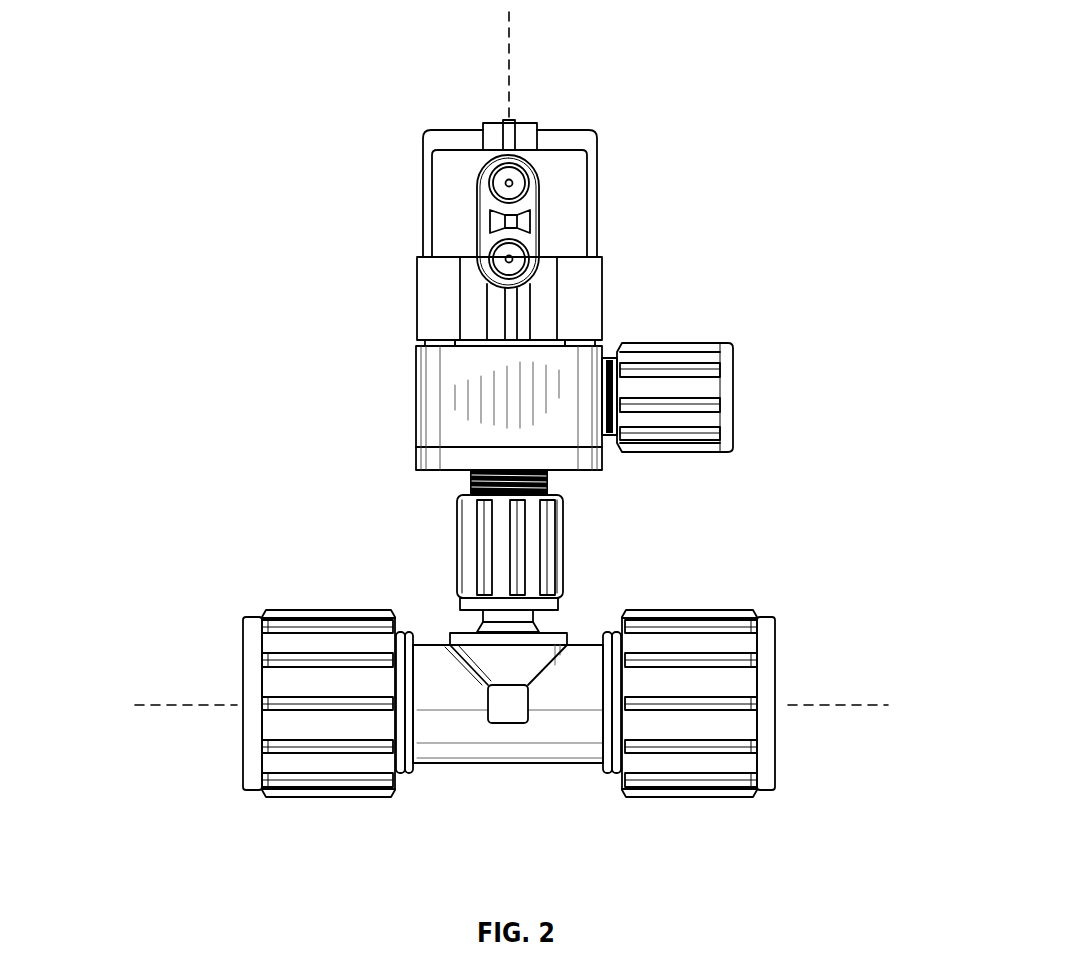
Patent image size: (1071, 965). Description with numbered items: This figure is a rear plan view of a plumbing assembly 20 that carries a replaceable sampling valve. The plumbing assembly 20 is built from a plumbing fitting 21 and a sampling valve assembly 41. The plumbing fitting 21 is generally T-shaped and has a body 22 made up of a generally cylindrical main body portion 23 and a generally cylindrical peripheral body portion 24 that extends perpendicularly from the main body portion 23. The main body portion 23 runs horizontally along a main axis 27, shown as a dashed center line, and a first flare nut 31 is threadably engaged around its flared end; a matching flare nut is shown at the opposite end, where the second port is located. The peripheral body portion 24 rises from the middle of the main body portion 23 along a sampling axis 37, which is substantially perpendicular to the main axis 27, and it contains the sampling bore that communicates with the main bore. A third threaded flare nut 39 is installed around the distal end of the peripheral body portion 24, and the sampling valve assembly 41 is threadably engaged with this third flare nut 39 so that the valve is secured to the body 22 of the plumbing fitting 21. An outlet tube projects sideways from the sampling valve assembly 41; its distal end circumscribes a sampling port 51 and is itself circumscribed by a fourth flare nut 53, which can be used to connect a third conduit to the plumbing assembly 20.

The plumbing assembly 20 is at (782, 153).
The plumbing fitting 21 is at (702, 581).
The body 22 is at (446, 648).
The main body portion 23 is at (523, 764).
The peripheral body portion 24 is at (536, 624).
The main axis 27 is at (850, 705).
The first flare nut 31 is at (243, 655).
The sampling axis 37 is at (510, 73).
The third threaded flare nut 39 is at (597, 525).
The sampling valve assembly 41 is at (390, 408).
The sampling port 51 is at (733, 405).
The fourth flare nut 53 is at (725, 345).